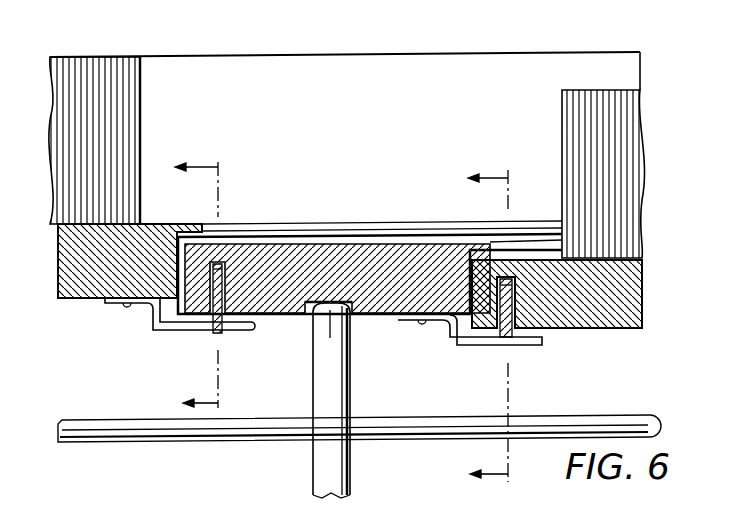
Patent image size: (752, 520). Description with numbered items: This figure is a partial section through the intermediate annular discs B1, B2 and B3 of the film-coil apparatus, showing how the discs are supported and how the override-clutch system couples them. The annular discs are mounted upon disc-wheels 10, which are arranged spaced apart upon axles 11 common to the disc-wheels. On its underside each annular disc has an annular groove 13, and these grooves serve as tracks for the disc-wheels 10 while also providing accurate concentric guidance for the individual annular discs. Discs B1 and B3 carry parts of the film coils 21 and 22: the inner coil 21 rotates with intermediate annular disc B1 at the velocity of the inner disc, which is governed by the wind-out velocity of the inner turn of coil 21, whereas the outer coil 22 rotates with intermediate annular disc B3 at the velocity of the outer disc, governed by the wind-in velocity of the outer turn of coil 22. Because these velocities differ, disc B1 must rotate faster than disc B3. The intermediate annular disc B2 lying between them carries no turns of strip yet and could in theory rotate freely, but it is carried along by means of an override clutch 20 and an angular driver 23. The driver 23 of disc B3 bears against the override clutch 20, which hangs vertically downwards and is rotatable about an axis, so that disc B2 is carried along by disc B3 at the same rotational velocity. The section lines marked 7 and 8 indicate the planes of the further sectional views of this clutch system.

The outer coil 22 is at (112, 64).
The inner coil 21 is at (638, 195).
The intermediate annular disc B3 is at (57, 270).
The intermediate annular disc B2 is at (278, 247).
The intermediate annular disc B1 is at (536, 258).
The annular groove 13 is at (323, 257).
The override clutch 20 is at (212, 334).
The angular driver 23 is at (153, 322).
The disc-wheel 10 is at (314, 473).
The axle 11 is at (75, 420).
The section line 7- 7 is at (187, 287).
The section line 8- 8 is at (477, 328).